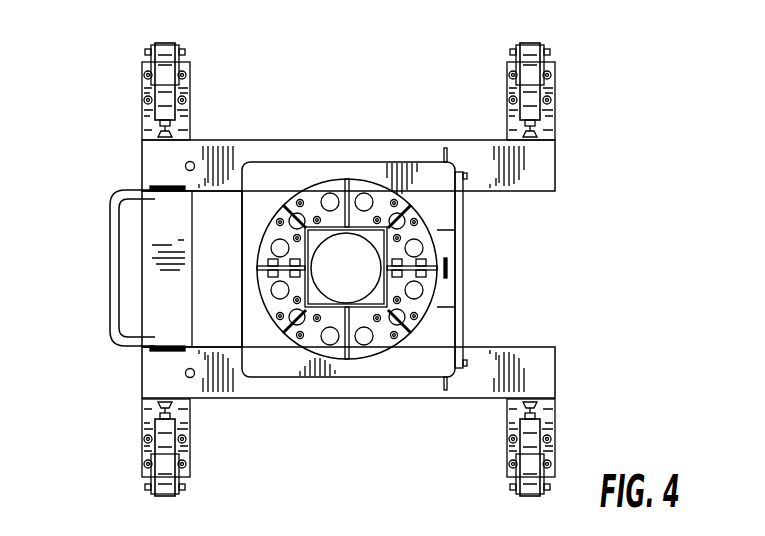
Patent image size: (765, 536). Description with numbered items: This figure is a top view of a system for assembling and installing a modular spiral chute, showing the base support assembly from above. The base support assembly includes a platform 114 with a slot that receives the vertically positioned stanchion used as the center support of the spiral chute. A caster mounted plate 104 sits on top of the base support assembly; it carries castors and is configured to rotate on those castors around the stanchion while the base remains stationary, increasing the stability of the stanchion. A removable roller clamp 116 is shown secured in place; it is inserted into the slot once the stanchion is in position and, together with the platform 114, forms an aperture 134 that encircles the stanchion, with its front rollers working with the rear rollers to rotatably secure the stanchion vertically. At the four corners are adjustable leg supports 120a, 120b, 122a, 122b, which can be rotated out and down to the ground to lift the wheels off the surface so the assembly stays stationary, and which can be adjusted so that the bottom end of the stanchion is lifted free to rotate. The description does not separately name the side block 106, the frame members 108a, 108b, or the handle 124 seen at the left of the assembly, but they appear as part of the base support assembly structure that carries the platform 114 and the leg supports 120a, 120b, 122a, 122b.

The caster mounted plate 104 is at (430, 250).
The side support block 106 is at (158, 232).
The upper frame rail 108a is at (381, 141).
The lower frame rail 108b is at (255, 390).
The platform 114 is at (273, 183).
The removable roller clamp 116 is at (450, 295).
The adjustable leg support 120a is at (165, 70).
The adjustable leg support 120b is at (168, 490).
The adjustable leg support 122a is at (532, 108).
The adjustable leg support 122b is at (532, 475).
The handle 124 is at (123, 345).
The aperture 134 is at (328, 288).